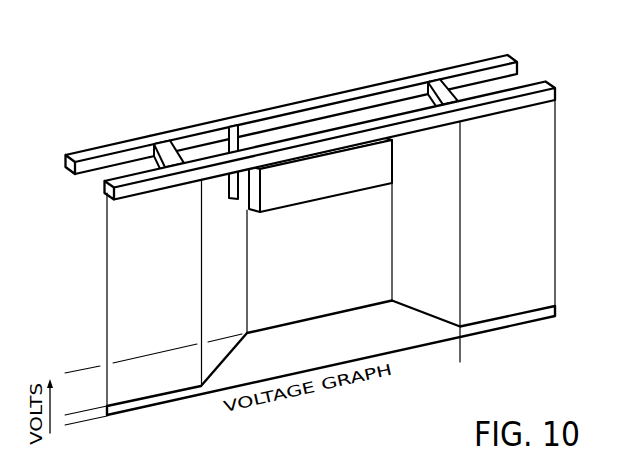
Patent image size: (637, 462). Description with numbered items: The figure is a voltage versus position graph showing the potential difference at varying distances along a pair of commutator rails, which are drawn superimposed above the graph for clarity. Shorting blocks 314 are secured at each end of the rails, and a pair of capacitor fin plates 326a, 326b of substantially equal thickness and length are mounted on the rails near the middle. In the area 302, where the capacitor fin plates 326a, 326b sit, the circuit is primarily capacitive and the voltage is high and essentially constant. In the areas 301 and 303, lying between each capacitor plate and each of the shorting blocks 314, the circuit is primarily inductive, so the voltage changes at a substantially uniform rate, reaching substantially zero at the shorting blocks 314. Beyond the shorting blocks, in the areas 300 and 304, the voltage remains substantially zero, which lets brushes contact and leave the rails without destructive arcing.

The area 300 is at (105, 115).
The area 301 is at (188, 131).
The area 302 is at (278, 104).
The area 303 is at (382, 83).
The area 304 is at (455, 66).
The shorting blocks 314 is at (140, 167).
The capacitor fin plate 326a is at (230, 200).
The capacitor fin plate 326b is at (295, 205).